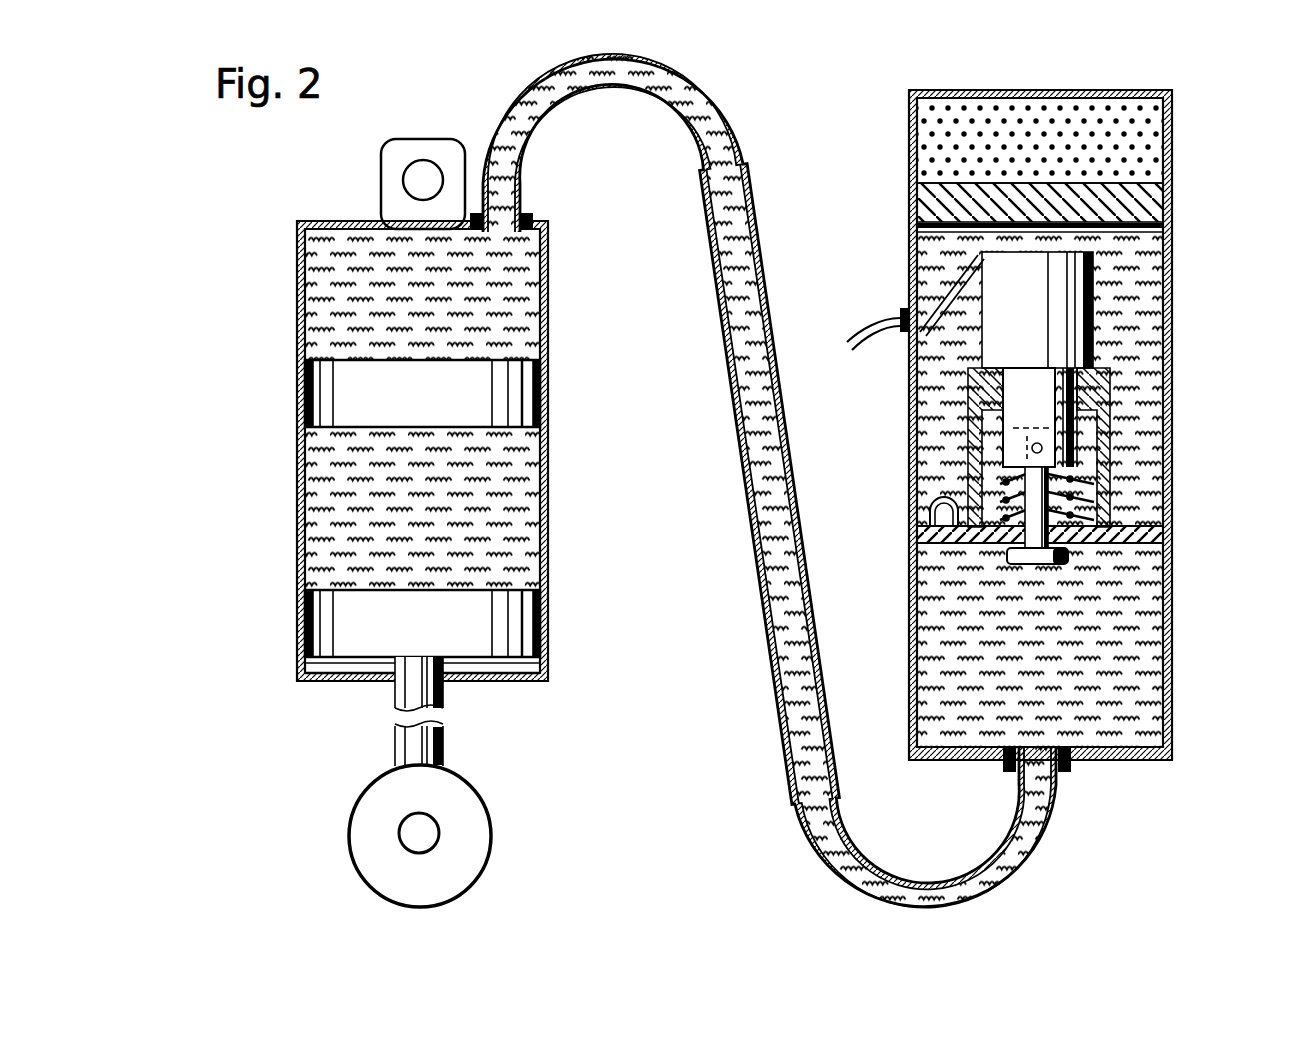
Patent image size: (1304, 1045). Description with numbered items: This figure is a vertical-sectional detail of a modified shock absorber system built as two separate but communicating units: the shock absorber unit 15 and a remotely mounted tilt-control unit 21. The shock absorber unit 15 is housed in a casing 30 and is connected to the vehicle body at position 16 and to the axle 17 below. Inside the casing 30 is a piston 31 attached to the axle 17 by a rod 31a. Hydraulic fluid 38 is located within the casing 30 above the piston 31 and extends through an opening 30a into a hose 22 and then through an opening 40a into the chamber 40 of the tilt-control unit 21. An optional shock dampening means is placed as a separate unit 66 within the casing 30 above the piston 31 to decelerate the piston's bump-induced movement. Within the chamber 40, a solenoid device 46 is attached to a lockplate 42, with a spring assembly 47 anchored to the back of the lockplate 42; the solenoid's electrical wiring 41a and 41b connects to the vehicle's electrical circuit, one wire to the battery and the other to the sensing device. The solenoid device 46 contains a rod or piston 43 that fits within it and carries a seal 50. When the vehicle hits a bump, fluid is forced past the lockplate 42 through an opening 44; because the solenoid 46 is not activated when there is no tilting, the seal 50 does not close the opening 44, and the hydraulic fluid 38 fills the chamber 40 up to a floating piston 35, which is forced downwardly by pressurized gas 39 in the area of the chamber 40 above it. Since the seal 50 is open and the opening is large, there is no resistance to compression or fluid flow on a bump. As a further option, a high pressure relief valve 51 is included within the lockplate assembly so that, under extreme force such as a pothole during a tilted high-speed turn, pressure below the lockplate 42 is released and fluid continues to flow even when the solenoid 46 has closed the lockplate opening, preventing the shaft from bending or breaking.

The shock absorber unit 15 is at (409, 507).
The position of connection to body 16 is at (405, 163).
The axle 17 is at (465, 825).
The tilt-control unit 21 is at (1032, 425).
The hose 22 is at (832, 481).
The casing 30 is at (420, 564).
The opening 30a is at (515, 250).
The piston 31 is at (375, 678).
The rod 31a is at (410, 743).
The floating piston 35 is at (1120, 205).
The hydraulic fluid 38 is at (484, 545).
The pressurized gas 39 is at (1100, 152).
The chamber 40 is at (1172, 295).
The opening 40a is at (1063, 733).
The electrical wiring 41a is at (898, 316).
The electrical wiring 41b is at (893, 345).
The lockplate 42 is at (1168, 540).
The piston 43 is at (1080, 495).
The opening 44 is at (1060, 508).
The solenoid device 46 is at (1060, 318).
The spring assembly 47 is at (1075, 490).
The seal 50 is at (1058, 558).
The high pressure relief valve 51 is at (920, 498).
The shock dampening means 66 is at (452, 383).